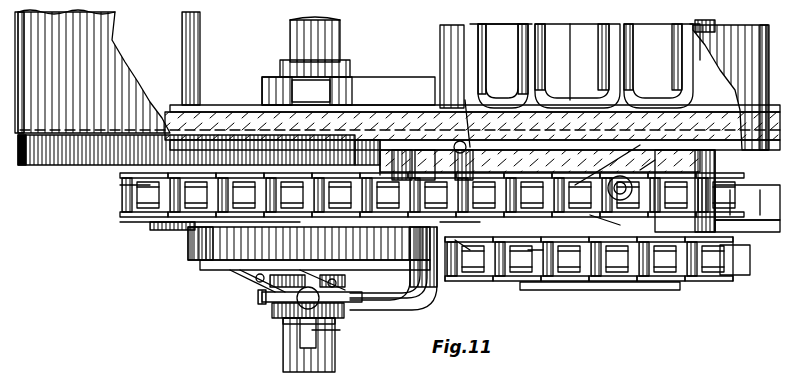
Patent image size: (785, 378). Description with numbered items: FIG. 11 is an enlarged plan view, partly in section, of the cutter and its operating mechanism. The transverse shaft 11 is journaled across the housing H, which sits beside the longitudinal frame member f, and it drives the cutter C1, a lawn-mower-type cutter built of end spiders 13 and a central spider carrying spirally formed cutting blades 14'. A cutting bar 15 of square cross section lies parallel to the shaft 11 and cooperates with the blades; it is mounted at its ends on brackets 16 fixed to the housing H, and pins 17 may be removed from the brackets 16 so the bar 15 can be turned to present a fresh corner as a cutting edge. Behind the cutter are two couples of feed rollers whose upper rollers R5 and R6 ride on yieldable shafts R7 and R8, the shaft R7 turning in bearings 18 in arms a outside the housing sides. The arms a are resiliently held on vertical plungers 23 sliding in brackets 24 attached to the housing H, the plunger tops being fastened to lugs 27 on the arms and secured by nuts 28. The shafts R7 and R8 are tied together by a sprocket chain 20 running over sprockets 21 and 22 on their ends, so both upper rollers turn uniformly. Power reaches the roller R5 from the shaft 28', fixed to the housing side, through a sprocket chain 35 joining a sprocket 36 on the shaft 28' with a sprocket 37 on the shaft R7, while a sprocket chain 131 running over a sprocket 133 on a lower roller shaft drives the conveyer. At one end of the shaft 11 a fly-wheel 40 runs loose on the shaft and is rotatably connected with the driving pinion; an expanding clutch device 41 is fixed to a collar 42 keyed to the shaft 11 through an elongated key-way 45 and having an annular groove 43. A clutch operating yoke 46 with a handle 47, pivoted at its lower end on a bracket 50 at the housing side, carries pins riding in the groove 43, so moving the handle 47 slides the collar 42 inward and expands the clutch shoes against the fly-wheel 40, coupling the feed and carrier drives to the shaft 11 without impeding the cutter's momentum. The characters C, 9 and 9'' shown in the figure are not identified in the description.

The housing H is at (96, 100).
The hatched band 9'' is at (186, 165).
The spirally formed cutting blades 14' is at (323, 60).
The transverse shaft 11 is at (342, 44).
The end spiders 13 is at (386, 92).
The cutter C1 is at (311, 91).
The clutch C is at (256, 39).
The longitudinal frame member f is at (370, 128).
The yieldable transverse shaft R8 is at (540, 300).
The upper roller R6 is at (588, 36).
The upper roller R5 is at (668, 36).
The yieldable transverse shaft R7 is at (696, 288).
The arms a is at (540, 148).
The brackets 24 is at (635, 147).
The lugs 27 is at (579, 174).
The plungers 23 is at (655, 171).
The rail 9 is at (357, 157).
The cutting bar 15 is at (477, 133).
The brackets 16 is at (445, 160).
The pins 17 is at (481, 165).
The bearings 18 is at (668, 200).
The sprocket chain 131 is at (765, 186).
The sprocket 133 is at (735, 226).
The sprocket 22 is at (735, 262).
The sprocket chain 20 is at (615, 282).
The sprocket 21 is at (570, 285).
The nut 28 is at (617, 198).
The sprocket 37 is at (538, 236).
The sprocket chain 35 is at (142, 212).
The sprocket 36 is at (138, 193).
The shaft 28' is at (150, 232).
The fly-wheel 40 is at (190, 249).
The expanding clutch device 41 is at (226, 269).
The clutch operating yoke 46 is at (270, 279).
The handle 47 is at (262, 304).
The annular groove 43 is at (272, 308).
The collar 42 is at (290, 320).
The key-way 45 is at (336, 331).
The pipe 50 is at (388, 316).